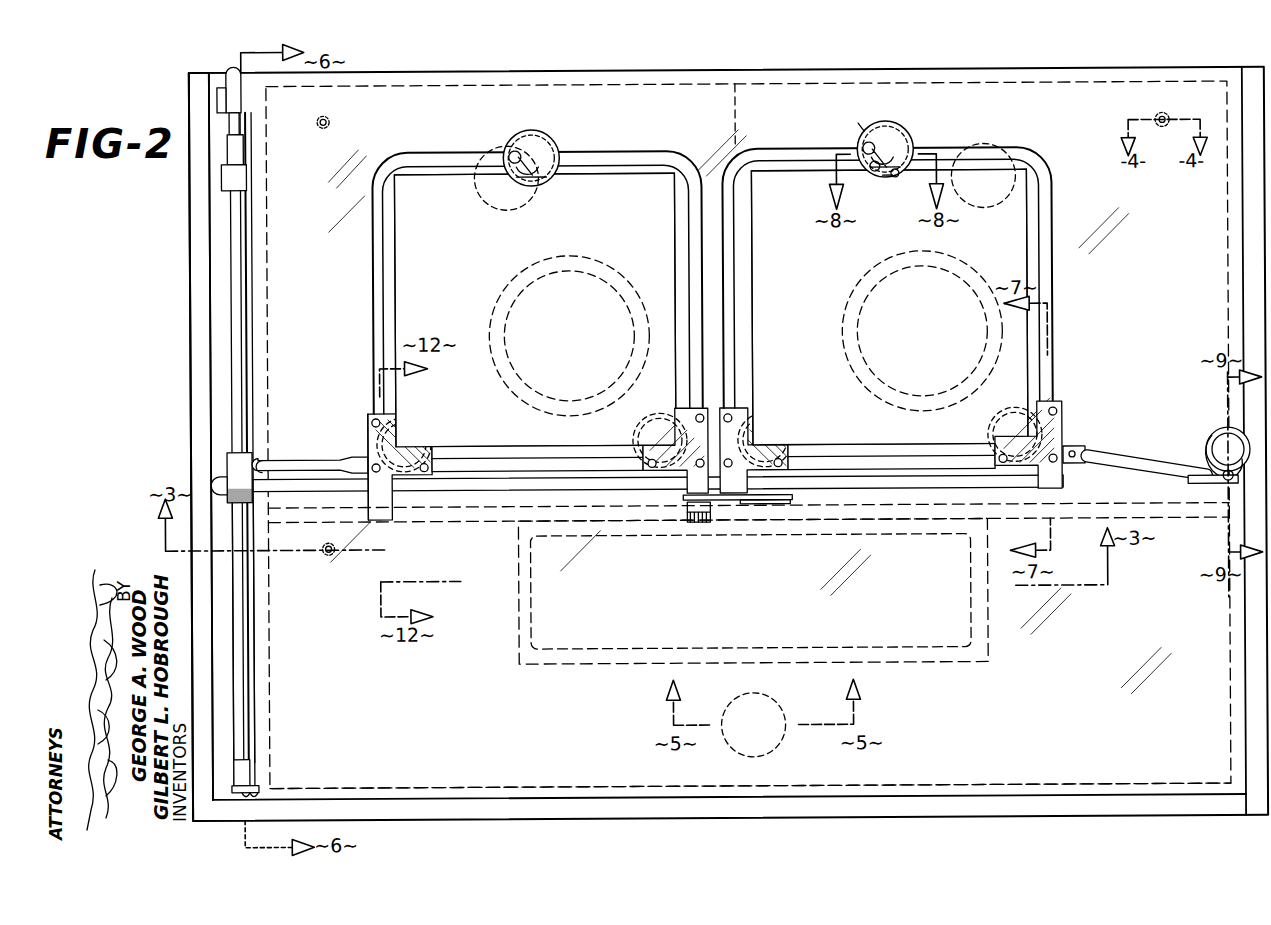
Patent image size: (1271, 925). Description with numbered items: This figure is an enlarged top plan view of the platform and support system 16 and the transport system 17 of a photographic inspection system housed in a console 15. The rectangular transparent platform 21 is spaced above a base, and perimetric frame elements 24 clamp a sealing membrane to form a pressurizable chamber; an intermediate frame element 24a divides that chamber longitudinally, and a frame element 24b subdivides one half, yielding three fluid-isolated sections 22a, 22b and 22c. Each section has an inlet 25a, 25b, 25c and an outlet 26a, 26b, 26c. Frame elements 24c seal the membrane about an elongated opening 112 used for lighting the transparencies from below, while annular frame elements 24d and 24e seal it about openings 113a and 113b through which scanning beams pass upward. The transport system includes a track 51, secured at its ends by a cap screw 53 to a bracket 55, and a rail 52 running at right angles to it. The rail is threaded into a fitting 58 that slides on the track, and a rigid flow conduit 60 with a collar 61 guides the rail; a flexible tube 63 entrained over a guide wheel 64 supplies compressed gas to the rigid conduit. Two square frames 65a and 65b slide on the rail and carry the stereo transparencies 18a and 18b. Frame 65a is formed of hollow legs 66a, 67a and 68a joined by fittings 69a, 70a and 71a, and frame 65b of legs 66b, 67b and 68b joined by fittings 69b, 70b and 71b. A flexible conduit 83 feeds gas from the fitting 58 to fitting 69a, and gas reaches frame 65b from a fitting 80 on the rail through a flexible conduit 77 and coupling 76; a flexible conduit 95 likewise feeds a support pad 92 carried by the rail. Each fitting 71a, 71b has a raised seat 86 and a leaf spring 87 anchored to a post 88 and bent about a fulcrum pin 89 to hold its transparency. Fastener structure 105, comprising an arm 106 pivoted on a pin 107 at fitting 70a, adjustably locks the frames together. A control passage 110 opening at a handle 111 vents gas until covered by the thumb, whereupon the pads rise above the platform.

The console 15 is at (188, 312).
The platform and support system 16 is at (290, 349).
The transport system 17 is at (368, 428).
The photographic transparency 18a is at (444, 258).
The photographic transparency 18b is at (814, 284).
The platform 21 is at (958, 768).
The pressurizable chamber section 22a is at (468, 128).
The pressurizable chamber section 22b is at (1062, 122).
The pressurizable chamber section 22c is at (494, 736).
The frame elements 24 is at (1062, 797).
The intermediate frame element 24a is at (482, 505).
The frame element 24b is at (760, 84).
The frame elements 24c is at (948, 663).
The annular frame element 24d is at (646, 322).
The annular frame element 24e is at (904, 394).
The inlet 25a is at (330, 114).
The inlet 25b is at (1160, 113).
The inlet 25c is at (322, 552).
The outlet 26a is at (530, 196).
The outlet 26b is at (984, 146).
The outlet 26c is at (776, 746).
The track 51 is at (245, 718).
The rail 52 is at (300, 470).
The cap screw 53 is at (258, 792).
The bracket 55 is at (252, 772).
The fitting 58 is at (227, 472).
The rigid flow conduit 60 is at (236, 270).
The collar 61 is at (223, 177).
The flexible tube 63 is at (230, 118).
The guide wheel 64 is at (228, 78).
The frame 65a is at (622, 156).
The frame 65b is at (1054, 270).
The frame element 66a is at (396, 308).
The frame element 66b is at (754, 328).
The frame element 67a is at (676, 250).
The frame element 67b is at (1028, 252).
The frame element 68a is at (506, 427).
The frame element 68b is at (832, 447).
The fitting 69a is at (390, 414).
The fitting 69b is at (748, 416).
The fitting 70a is at (672, 420).
The fitting 70b is at (1058, 406).
The fitting 71a is at (533, 130).
The fitting 71b is at (880, 124).
The coupling 76 is at (1086, 452).
The flexible conduit 77 is at (1148, 458).
The fitting 80 is at (1200, 486).
The flexible conduit 83 is at (275, 456).
The raised seat 86 is at (898, 174).
The leaf spring 87 is at (888, 178).
The post 88 is at (868, 140).
The fulcrum pin 89 is at (876, 168).
The support pad 92 is at (1216, 432).
The flexible conduit 95 is at (1226, 484).
The fastener structure 105 is at (720, 500).
The arm 106 is at (788, 504).
The pin 107 is at (700, 522).
The control passage 110 is at (368, 491).
The handle 111 is at (378, 518).
The elongated opening 112 is at (966, 638).
The opening 113a is at (562, 276).
The opening 113b is at (970, 370).